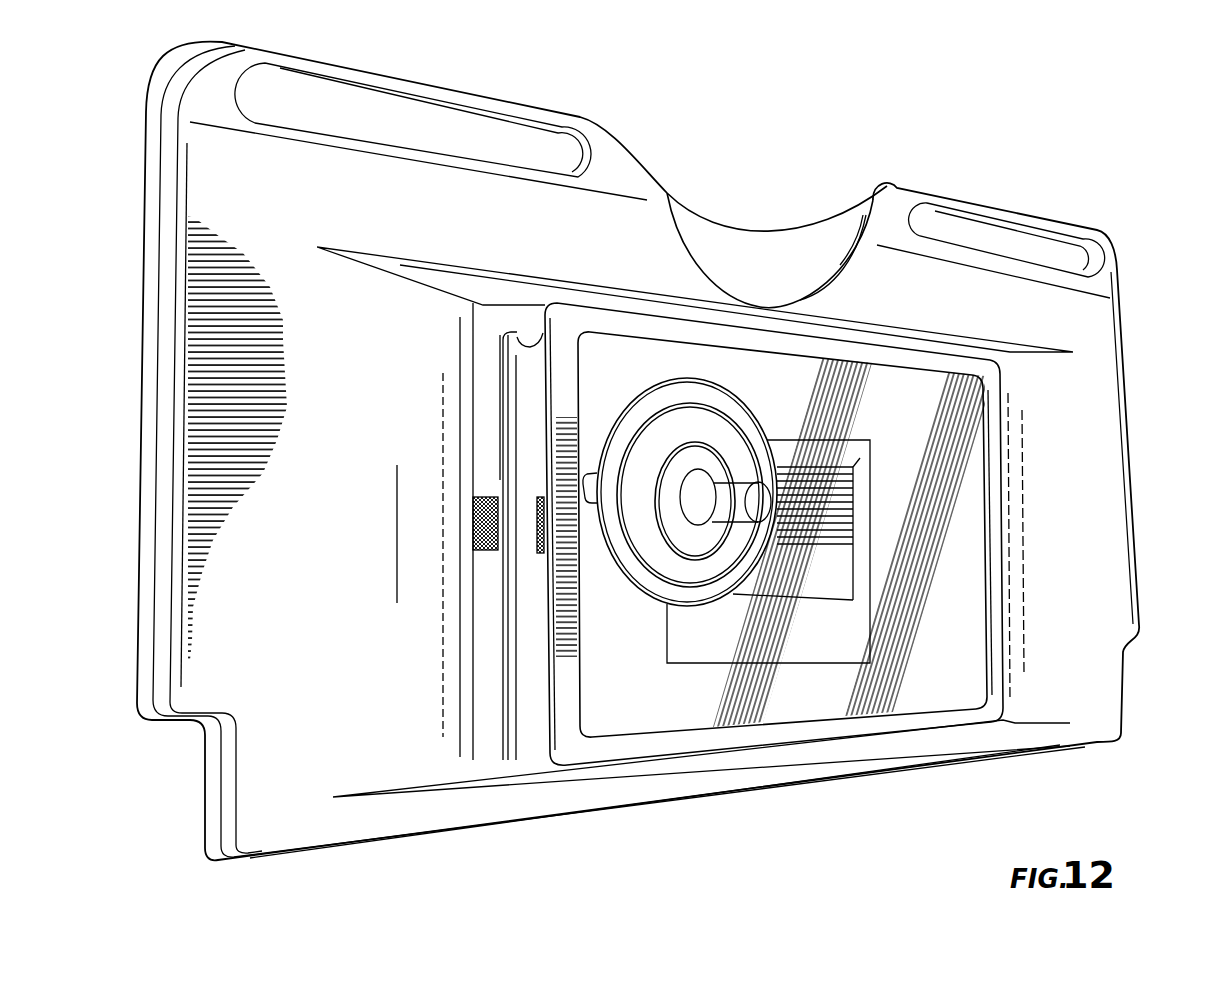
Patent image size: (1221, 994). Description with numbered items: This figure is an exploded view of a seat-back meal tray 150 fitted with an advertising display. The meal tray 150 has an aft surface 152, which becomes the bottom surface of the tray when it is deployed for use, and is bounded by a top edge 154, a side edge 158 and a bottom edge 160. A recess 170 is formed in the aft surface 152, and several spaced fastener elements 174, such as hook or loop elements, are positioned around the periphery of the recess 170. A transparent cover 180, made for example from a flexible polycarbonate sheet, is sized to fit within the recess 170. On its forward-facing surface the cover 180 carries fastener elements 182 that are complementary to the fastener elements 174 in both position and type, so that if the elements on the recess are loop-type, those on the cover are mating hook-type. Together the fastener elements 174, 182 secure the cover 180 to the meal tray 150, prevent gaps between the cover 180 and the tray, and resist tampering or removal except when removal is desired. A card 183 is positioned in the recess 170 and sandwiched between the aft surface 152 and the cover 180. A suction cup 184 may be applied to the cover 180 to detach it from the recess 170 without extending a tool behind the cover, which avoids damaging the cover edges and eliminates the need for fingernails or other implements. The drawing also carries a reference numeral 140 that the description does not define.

The door latch assembly 140 is at (527, 343).
The meal tray 150 is at (1135, 175).
The aft surface 152 is at (1087, 325).
The top edge 154 is at (887, 187).
The side edge 158 is at (1140, 537).
The bottom edge 160 is at (457, 830).
The recess 170 is at (517, 338).
The fastener elements 174 is at (488, 497).
The transparent cover 180 is at (990, 412).
The fastener elements 182 is at (540, 530).
The card 183 is at (840, 655).
The suction cup 184 is at (677, 575).